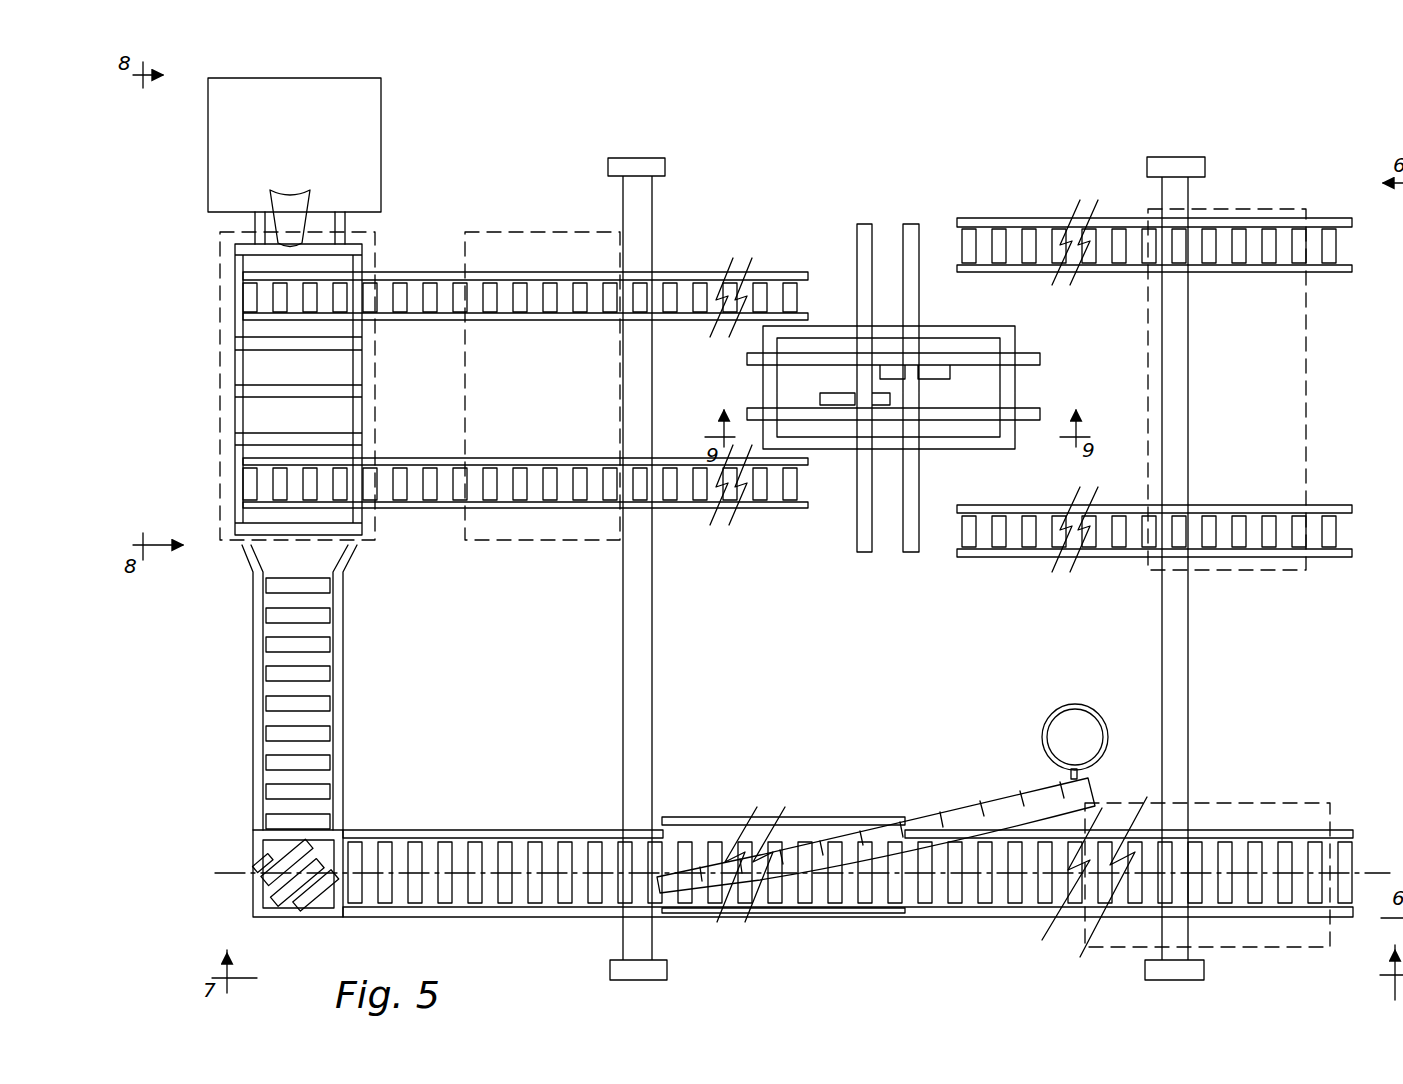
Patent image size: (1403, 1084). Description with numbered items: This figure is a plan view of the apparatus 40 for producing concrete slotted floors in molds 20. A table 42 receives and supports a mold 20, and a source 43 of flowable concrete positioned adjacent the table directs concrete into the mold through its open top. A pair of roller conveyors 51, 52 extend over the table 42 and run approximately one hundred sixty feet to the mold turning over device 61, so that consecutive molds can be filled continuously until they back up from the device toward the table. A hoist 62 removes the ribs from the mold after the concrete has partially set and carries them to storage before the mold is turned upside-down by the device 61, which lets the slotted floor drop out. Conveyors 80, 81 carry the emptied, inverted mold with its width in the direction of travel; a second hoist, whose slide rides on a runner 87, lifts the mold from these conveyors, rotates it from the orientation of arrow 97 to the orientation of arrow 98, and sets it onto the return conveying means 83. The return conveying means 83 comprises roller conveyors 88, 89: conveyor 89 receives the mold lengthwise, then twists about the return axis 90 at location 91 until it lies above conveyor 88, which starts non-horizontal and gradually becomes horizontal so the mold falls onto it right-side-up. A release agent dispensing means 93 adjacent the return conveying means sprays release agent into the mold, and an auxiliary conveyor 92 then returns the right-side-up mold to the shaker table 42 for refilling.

The mold 20 is at (225, 252).
The apparatus 40 is at (1062, 150).
The table 42 is at (285, 517).
The source of flowable concrete 43 is at (220, 150).
The roller conveyor 51 is at (440, 305).
The roller conveyor 52 is at (440, 470).
The mold turning over device 61 is at (885, 565).
The hoist 62 is at (640, 630).
The conveyor 80 is at (980, 560).
The conveyor 81 is at (968, 222).
The return conveying means 83 is at (975, 785).
The runner 87 is at (1192, 645).
The roller conveyor 88 is at (480, 830).
The roller conveyor 89 is at (1353, 830).
The return axis 90 is at (222, 870).
The location 91 is at (785, 935).
The auxiliary conveyor 92 is at (337, 707).
The release agent dispensing means 93 is at (1090, 708).
The arrow 97 is at (1228, 422).
The arrow 98 is at (1025, 972).